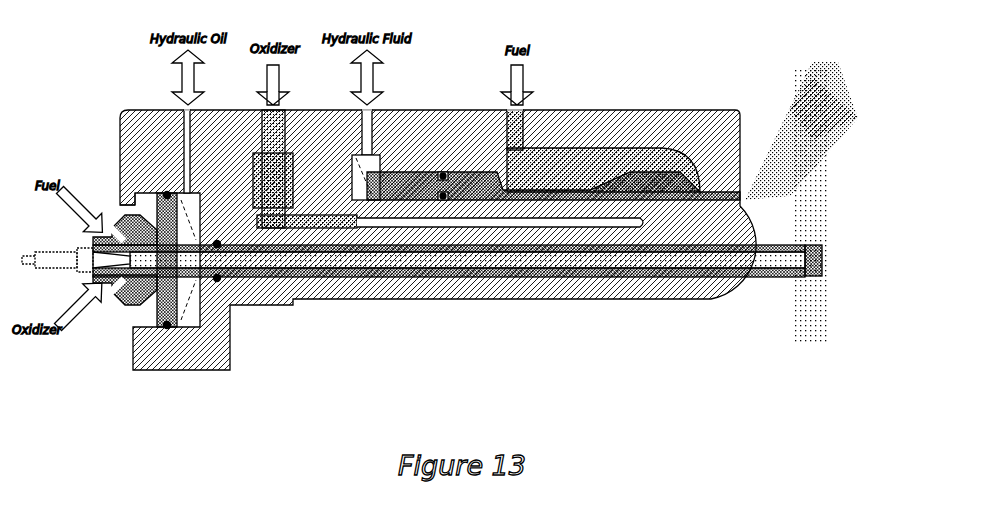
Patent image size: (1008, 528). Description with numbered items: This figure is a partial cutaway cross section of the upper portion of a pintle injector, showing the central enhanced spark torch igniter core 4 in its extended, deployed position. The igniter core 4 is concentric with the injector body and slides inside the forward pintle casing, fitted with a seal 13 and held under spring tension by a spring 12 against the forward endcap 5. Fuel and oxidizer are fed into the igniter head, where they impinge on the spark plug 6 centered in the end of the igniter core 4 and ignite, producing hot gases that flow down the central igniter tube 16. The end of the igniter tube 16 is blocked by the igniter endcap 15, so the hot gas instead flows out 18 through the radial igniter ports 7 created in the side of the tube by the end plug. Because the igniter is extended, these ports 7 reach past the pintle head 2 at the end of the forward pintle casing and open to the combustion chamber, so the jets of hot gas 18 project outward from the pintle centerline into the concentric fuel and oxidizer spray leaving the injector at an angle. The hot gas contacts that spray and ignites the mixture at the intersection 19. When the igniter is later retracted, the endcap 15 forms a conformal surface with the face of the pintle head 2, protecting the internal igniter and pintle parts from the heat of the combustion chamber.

The pintle head 2 is at (776, 292).
The spark torch igniter core 4 is at (127, 293).
The forward endcap 5 is at (122, 172).
The spark plug 6 is at (56, 248).
The igniter ports 7 is at (777, 152).
The spring 12 is at (193, 298).
The seal 13 is at (165, 192).
The igniter endcap 15 is at (826, 259).
The igniter tube 16 is at (643, 258).
The jets of hot gas 18 is at (816, 319).
The intersection 19 is at (818, 110).